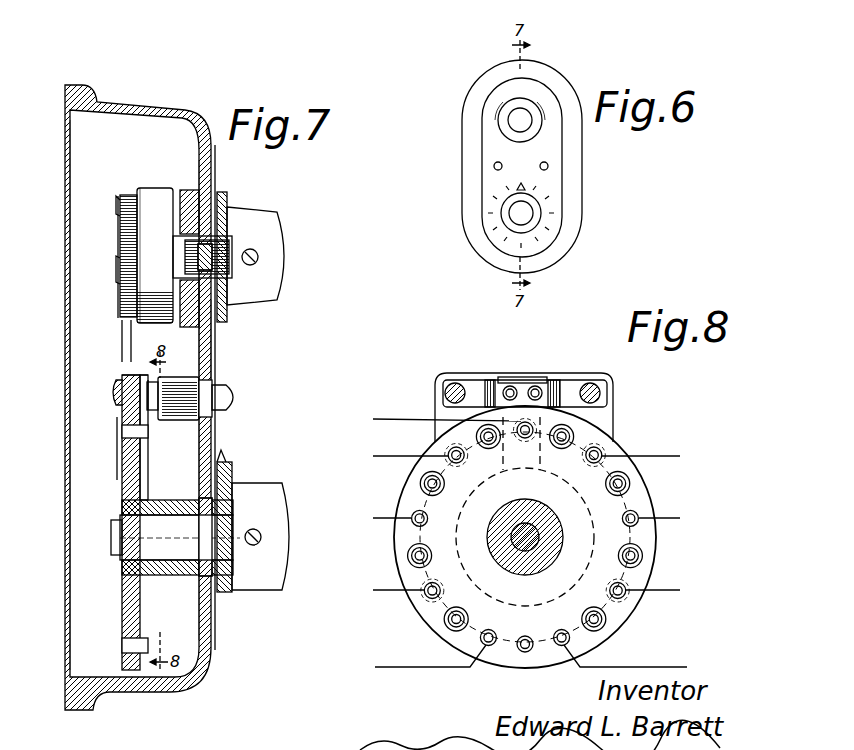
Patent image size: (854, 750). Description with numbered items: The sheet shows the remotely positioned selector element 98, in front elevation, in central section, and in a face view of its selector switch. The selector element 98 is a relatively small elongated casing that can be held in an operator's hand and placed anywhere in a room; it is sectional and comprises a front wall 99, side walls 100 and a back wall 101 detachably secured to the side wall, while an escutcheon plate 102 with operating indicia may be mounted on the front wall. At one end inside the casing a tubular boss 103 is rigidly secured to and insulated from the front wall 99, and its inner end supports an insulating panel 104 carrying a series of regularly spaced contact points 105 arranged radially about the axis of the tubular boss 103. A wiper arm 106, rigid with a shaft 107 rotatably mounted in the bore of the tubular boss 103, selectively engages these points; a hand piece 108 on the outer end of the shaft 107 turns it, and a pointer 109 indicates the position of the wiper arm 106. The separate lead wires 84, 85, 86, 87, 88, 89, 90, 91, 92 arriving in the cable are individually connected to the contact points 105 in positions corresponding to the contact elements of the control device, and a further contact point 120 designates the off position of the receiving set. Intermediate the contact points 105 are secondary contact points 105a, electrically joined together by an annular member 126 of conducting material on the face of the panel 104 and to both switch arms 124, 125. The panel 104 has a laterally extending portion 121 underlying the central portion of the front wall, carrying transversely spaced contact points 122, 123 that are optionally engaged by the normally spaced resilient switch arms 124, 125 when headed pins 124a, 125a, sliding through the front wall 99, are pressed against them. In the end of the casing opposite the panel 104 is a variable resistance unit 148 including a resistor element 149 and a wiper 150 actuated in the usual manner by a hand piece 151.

In FIG. 7, the selector element 98 is at (211, 670).
In FIG. 6, the selector element 98 is at (584, 177).
In FIG. 7, the front wall 99 is at (214, 352).
In FIG. 7, the side walls 100 is at (120, 103).
In FIG. 7, the back wall 101 is at (67, 476).
In FIG. 7, the escutcheon plate 102 is at (214, 429).
In FIG. 7, the tubular boss 103 is at (178, 562).
In FIG. 8, the tubular boss 103 is at (540, 555).
In FIG. 7, the panel 104 is at (144, 486).
In FIG. 7, the contact points 105 is at (143, 432).
In FIG. 8, the contact points 105 is at (450, 464).
In FIG. 8, the secondary contact points 105a is at (420, 485).
In FIG. 7, the wiper arm 106 is at (116, 472).
In FIG. 8, the wiper arm 106 is at (525, 511).
In FIG. 7, the shaft 107 is at (179, 530).
In FIG. 8, the shaft 107 is at (528, 518).
In FIG. 7, the hand piece 108 is at (266, 561).
In FIG. 6, the hand piece 108 is at (516, 216).
In FIG. 7, the pointer 109 is at (223, 459).
In FIG. 8, the contact point 120 is at (525, 653).
In FIG. 7, the laterally extending portion 121 is at (124, 376).
In FIG. 8, the laterally extending portion 121 is at (584, 373).
In FIG. 8, the contact point 122 is at (457, 385).
In FIG. 7, the contact point 123 is at (115, 391).
In FIG. 8, the contact point 123 is at (612, 383).
In FIG. 8, the switch arm 124 is at (488, 382).
In FIG. 6, the headed pin 124a is at (493, 166).
In FIG. 7, the switch arm 125 is at (148, 380).
In FIG. 8, the switch arm 125 is at (556, 382).
In FIG. 7, the headed pin 125a is at (238, 397).
In FIG. 6, the headed pin 125a is at (549, 164).
In FIG. 7, the annular member 126 is at (141, 617).
In FIG. 8, the annular member 126 is at (400, 537).
In FIG. 7, the variable resistance unit 148 is at (143, 183).
In FIG. 7, the resistor element 149 is at (125, 295).
In FIG. 7, the wiper 150 is at (120, 226).
In FIG. 7, the hand piece 151 is at (266, 225).
In FIG. 6, the hand piece 151 is at (516, 122).
In FIG. 8, the lead wire 84 is at (428, 666).
In FIG. 8, the lead wire 85 is at (386, 591).
In FIG. 8, the lead wire 86 is at (383, 517).
In FIG. 8, the lead wire 87 is at (448, 452).
In FIG. 8, the lead wire 88 is at (526, 418).
In FIG. 8, the lead wire 89 is at (602, 455).
In FIG. 8, the lead wire 90 is at (668, 517).
In FIG. 8, the lead wire 91 is at (685, 591).
In FIG. 8, the lead wire 92 is at (685, 666).